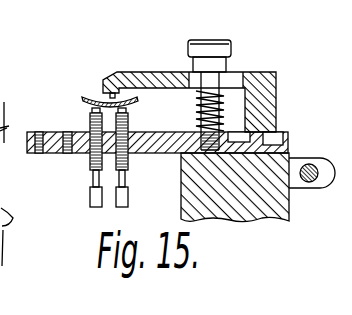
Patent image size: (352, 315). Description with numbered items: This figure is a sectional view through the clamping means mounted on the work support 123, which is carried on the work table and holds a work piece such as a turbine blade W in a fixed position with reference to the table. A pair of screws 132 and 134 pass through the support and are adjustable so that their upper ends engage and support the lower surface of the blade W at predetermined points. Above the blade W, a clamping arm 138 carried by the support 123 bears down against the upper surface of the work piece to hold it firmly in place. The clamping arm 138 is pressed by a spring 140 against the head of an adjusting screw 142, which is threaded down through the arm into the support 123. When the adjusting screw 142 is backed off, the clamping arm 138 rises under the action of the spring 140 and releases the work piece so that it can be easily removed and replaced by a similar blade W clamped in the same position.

The work support 123 is at (274, 209).
The clamping arm 138 is at (155, 72).
The adjusting screw 142 is at (216, 47).
The spring 140 is at (195, 111).
The turbine blade W is at (96, 99).
The screw 134 is at (90, 169).
The screw 132 is at (132, 170).